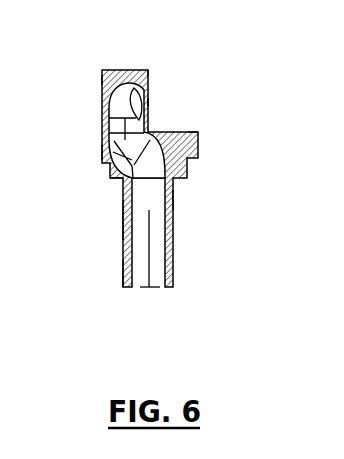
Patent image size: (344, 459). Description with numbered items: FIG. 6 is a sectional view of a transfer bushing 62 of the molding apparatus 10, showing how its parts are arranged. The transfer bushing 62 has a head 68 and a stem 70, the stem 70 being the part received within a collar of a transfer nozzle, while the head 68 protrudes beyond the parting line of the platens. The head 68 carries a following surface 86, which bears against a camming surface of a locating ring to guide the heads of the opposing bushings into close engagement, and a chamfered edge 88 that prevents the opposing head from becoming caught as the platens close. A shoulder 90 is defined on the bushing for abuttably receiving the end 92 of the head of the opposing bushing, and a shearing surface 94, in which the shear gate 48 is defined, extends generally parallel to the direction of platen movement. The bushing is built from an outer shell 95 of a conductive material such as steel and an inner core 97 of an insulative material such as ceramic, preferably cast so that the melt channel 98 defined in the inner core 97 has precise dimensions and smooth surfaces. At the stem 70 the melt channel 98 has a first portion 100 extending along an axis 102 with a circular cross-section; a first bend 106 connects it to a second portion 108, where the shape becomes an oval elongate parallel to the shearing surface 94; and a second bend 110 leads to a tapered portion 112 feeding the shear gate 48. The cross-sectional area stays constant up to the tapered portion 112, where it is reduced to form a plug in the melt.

The end 92 is at (123, 70).
The chamfered edge 88 is at (148, 72).
The tapered portion 112 is at (149, 88).
The first shear gate 48 is at (149, 102).
The shearing surface 94 is at (149, 118).
The first transfer bushing 62 is at (252, 57).
The shoulder 90 is at (192, 131).
The outer shell 95 is at (253, 166).
The inner core 97 is at (173, 200).
The dispenser 10 is at (336, 188).
The following surface 86 is at (102, 81).
The second bend 110 is at (107, 101).
The head 68 is at (102, 127).
The second portion 108 is at (100, 150).
The first bend 106 is at (108, 184).
The stem 70 is at (123, 221).
The first portion 100 is at (123, 277).
The melt channel 98 is at (142, 263).
The axis 102 is at (150, 288).